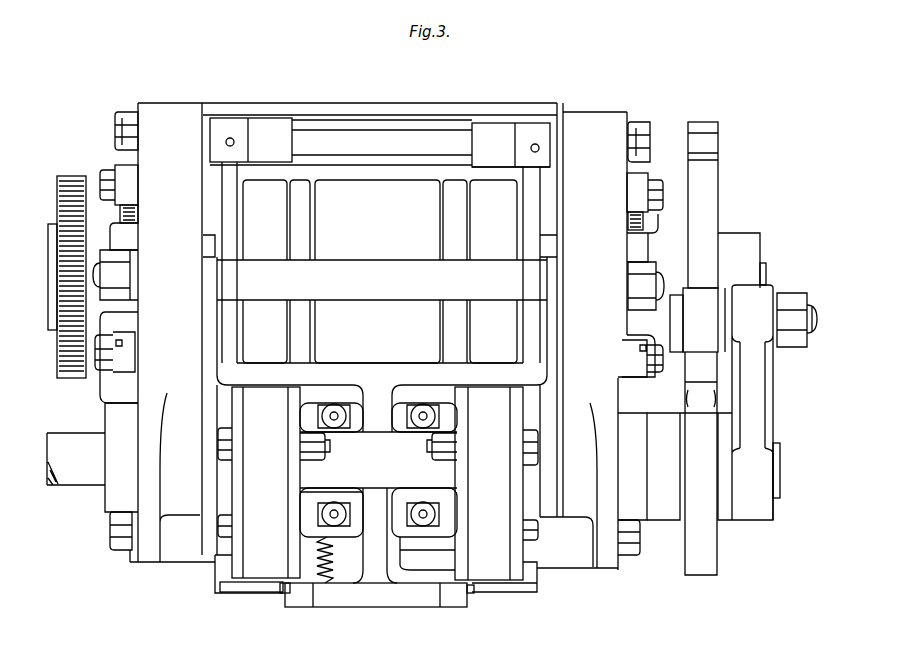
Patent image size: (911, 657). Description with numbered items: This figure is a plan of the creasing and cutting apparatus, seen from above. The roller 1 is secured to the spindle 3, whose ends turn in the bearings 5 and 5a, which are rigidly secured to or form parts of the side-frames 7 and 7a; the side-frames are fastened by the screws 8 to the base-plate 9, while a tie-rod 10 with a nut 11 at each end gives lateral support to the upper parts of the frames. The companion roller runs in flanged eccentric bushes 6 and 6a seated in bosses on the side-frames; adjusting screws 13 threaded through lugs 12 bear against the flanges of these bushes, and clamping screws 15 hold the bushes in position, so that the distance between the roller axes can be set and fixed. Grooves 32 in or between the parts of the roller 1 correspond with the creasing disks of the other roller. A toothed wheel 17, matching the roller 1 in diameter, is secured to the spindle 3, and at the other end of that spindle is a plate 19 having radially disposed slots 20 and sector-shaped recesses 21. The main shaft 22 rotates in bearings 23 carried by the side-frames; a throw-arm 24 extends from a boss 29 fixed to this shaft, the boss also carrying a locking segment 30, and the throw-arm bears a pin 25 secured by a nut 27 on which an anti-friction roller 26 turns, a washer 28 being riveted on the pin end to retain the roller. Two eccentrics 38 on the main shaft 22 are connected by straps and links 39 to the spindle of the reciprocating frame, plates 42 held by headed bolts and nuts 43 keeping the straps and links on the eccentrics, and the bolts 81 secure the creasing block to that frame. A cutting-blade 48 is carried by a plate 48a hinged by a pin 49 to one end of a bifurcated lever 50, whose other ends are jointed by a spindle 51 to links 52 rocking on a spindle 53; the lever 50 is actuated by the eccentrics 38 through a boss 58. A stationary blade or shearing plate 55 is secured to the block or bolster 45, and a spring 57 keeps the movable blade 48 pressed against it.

The roller 1 is at (380, 271).
The spindle 3 is at (51, 266).
The bearing 5 is at (637, 247).
The bearing 5a is at (123, 236).
The flanged eccentric bush 6 is at (643, 181).
The flanged eccentric bush 6a is at (117, 168).
The side-frame 7 is at (583, 341).
The side-frame 7a is at (170, 332).
The screw 8 is at (125, 112).
The base-plate 9 is at (368, 107).
The tie-rod 10 is at (382, 280).
The nut 11 is at (378, 280).
The lug 12 is at (120, 221).
The adjusting screw 13 is at (137, 212).
The clamping screw 15 is at (105, 178).
The toothed wheel 17 is at (70, 378).
The plate 19 is at (718, 188).
The radially disposed slot 20 is at (703, 145).
The sector-shaped recess 21 is at (725, 256).
The main shaft 22 is at (794, 473).
The bearing 23 is at (376, 461).
The throw-arm 24 is at (752, 402).
The pin 25 is at (811, 307).
The anti-friction roller 26 is at (704, 320).
The nut 27 is at (793, 296).
The washer 28 is at (674, 313).
The boss 29 is at (710, 466).
The locking segment 30 is at (701, 463).
The groove 32 is at (315, 346).
The eccentric 38 is at (297, 399).
The straps and links 39 is at (377, 483).
The plate 42 is at (232, 504).
The headed bolt and nut 43 is at (221, 456).
The block or bolster 45 is at (427, 553).
The cutting-blade 48 is at (248, 593).
The plate 48a is at (298, 608).
The pin 49 is at (281, 594).
The bifurcated lever 50 is at (382, 372).
The spindle 51 is at (380, 143).
The link 52 is at (380, 142).
The spindle 53 is at (130, 134).
The stationary blade or shearing plate 55 is at (217, 590).
The spring 57 is at (331, 561).
The boss 58 is at (345, 493).
The bolt 81 is at (320, 416).